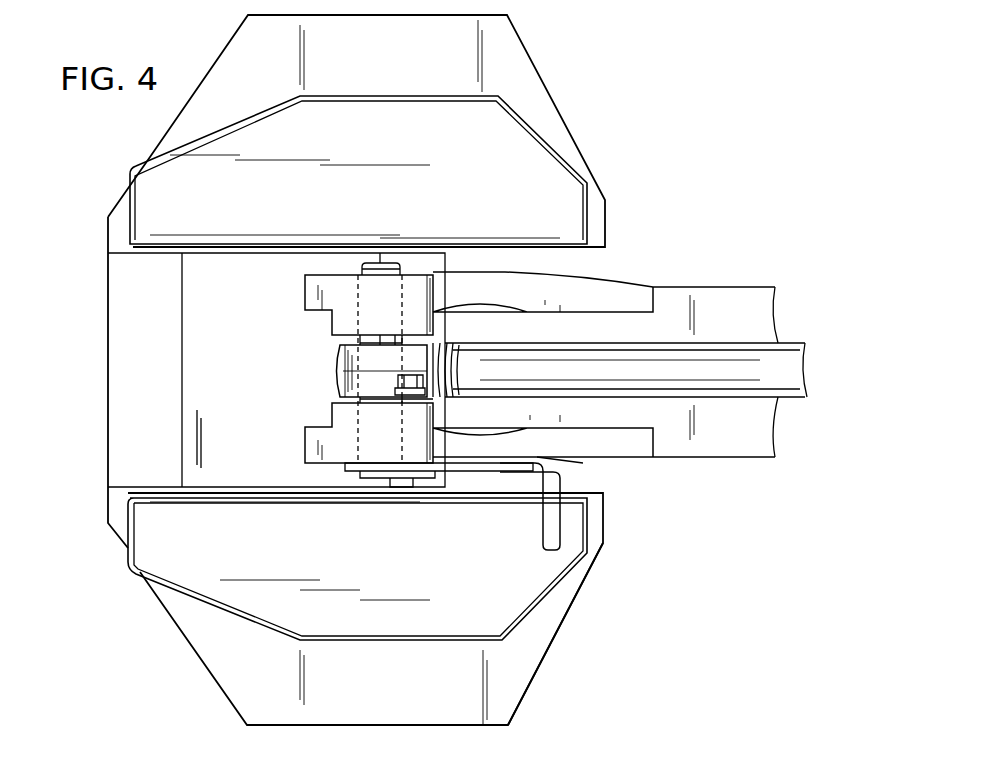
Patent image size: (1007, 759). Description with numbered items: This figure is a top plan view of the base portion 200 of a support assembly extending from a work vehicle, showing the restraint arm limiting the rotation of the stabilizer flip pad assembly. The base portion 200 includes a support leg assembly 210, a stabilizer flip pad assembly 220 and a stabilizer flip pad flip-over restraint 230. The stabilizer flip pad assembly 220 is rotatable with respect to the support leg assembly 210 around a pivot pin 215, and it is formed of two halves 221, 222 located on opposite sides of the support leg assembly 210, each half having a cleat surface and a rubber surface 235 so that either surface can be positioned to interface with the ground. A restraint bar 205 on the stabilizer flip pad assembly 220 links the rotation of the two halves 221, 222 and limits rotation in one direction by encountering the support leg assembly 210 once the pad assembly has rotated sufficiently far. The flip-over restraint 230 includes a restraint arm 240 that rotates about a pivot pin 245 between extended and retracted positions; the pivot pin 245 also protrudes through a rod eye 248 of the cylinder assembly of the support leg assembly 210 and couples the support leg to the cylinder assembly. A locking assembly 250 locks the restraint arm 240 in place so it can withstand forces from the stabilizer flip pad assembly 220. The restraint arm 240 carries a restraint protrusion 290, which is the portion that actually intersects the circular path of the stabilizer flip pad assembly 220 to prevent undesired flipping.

The base portion 200 is at (128, 645).
The restraint bar 205 is at (108, 370).
The support leg assembly 210 is at (706, 285).
The pivot pin 215 is at (472, 250).
The stabilizer flip pad assembly 220 is at (542, 667).
The first half of stabilizer flip pad assembly 221 is at (533, 44).
The second half of stabilizer flip pad assembly 222 is at (600, 560).
The stabilizer flip pad flip-over restraint 230 is at (313, 368).
The rubber surface 235 is at (575, 162).
The restraint arm 240 is at (583, 462).
The pivot pin 245 is at (358, 322).
The rod eye 248 is at (333, 392).
The locking assembly 250 is at (437, 413).
The restraint protrusion 290 is at (560, 537).